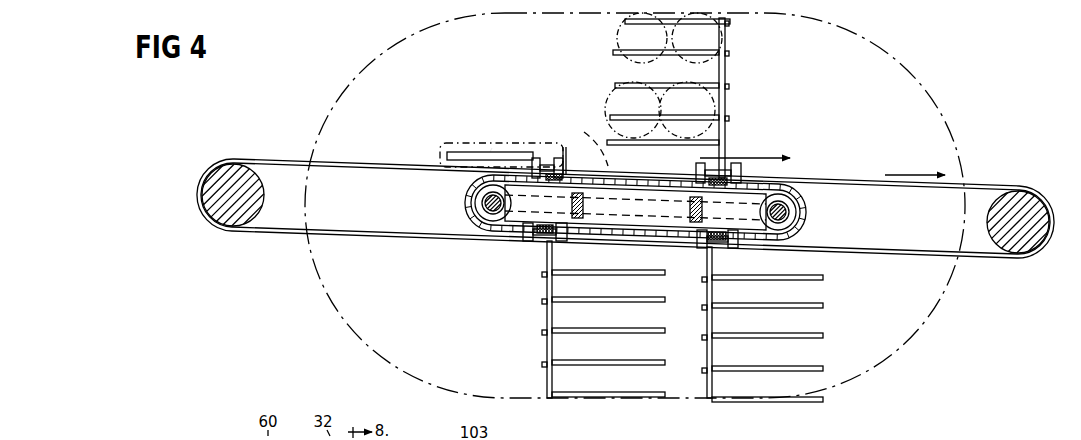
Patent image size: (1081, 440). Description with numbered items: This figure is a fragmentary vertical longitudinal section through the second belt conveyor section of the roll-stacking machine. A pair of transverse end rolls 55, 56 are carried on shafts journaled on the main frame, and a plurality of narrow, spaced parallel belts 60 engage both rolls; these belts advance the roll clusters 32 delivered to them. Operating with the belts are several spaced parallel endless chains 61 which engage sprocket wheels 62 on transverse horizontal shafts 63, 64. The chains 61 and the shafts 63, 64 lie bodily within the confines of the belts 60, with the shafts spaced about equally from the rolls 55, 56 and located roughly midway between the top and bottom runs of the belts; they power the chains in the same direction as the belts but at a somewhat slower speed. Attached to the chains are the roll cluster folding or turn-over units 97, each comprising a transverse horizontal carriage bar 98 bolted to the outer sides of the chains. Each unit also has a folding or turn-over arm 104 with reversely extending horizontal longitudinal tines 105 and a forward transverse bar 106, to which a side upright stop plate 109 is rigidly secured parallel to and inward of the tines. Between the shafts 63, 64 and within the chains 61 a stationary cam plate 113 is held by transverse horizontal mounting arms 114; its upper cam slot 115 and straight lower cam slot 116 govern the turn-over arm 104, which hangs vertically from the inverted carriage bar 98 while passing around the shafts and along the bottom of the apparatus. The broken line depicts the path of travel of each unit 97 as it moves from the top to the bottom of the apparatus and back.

The roll cluster 32 is at (622, 68).
The transverse end roll 55 is at (240, 179).
The transverse end roll 56 is at (1025, 206).
The belt 60 is at (388, 163).
The endless chain 61 is at (766, 188).
The sprocket wheel 62 is at (476, 203).
The transverse horizontal shaft 63 is at (784, 218).
The transverse horizontal shaft 64 is at (494, 210).
The roll cluster folding or turn-over unit 97 is at (491, 152).
The carriage bar 98 is at (548, 241).
The folding or turn-over arm 104 is at (731, 44).
The tine 105 is at (627, 27).
The forward transverse bar 106 is at (713, 350).
The side upright stop plate 109 is at (466, 152).
The stationary cam plate 113 is at (642, 205).
The mounting arm 114 is at (583, 208).
The upper cam slot 115 is at (582, 140).
The lower cam slot 116 is at (641, 214).